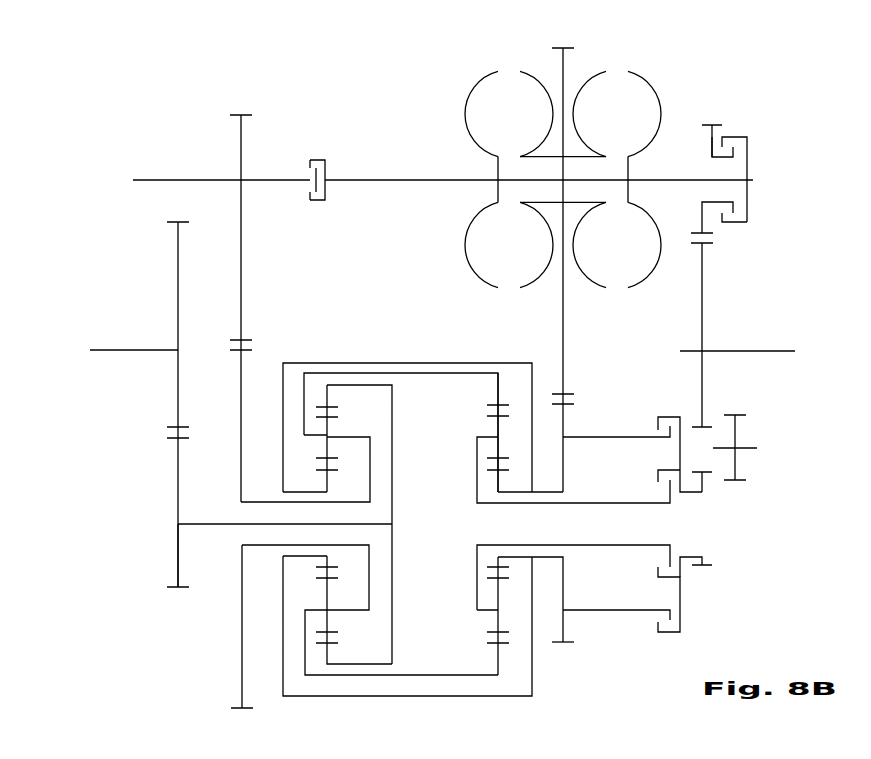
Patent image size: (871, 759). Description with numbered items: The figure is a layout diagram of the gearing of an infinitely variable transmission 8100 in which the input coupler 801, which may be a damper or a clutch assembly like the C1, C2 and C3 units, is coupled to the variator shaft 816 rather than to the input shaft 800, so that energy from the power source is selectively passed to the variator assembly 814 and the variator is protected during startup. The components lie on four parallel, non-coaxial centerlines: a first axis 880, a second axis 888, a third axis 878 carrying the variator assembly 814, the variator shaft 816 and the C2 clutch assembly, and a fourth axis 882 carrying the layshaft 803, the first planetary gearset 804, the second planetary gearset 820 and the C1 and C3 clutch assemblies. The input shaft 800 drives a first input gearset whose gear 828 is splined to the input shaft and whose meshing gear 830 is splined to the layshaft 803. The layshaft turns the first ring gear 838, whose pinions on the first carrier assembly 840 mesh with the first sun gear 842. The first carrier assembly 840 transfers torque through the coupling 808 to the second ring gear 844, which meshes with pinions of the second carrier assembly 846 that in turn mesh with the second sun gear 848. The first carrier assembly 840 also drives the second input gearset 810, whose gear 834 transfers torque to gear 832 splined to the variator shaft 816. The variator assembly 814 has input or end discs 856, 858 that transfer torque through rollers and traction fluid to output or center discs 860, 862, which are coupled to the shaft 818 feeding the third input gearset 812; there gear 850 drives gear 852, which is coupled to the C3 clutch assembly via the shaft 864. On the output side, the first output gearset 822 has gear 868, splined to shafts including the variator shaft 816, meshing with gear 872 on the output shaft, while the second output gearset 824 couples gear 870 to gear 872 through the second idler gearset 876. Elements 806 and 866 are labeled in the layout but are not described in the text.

The transmission 8100 is at (172, 92).
The third axis 878 is at (110, 180).
The variator shaft 816 is at (368, 177).
The input coupler 801 is at (318, 148).
The variator assembly 814 is at (556, 170).
The input disc 856 is at (466, 122).
The output disc 860 is at (551, 100).
The output disc 862 is at (575, 112).
The input disc 858 is at (660, 104).
The shaft 818 is at (600, 202).
The gear 850 is at (564, 336).
The first output gearset 822 is at (744, 148).
The C2 clutch assembly C2 is at (774, 133).
The gear 868 is at (712, 142).
The gear 872 is at (703, 283).
The second axis 888 is at (797, 352).
The gear 828 is at (178, 256).
The gear 832 is at (242, 248).
The first axis 880 is at (77, 350).
The input shaft 800 is at (137, 351).
The ring gear 806 is at (382, 362).
The first ring gear 838 is at (356, 373).
The coupling 808 is at (447, 363).
The first carrier assembly 840 is at (328, 430).
The first sun gear 842 is at (327, 445).
The second ring gear 844 is at (498, 393).
The second carrier assembly 846 is at (498, 426).
The second sun gear 848 is at (484, 474).
The shaft 864 is at (602, 437).
The shaft 866 is at (602, 503).
The C3 clutch assembly C3 is at (667, 446).
The C1 clutch assembly C1 is at (672, 480).
The second idler gearset 876 is at (736, 456).
The fourth axis 882 is at (163, 522).
The layshaft 803 is at (210, 523).
The gear 830 is at (178, 548).
The gear 834 is at (242, 633).
The second input gearset 810 is at (238, 716).
The first planetary gearset 804 is at (328, 701).
The second planetary gearset 820 is at (500, 701).
The gear 852 is at (564, 576).
The third input gearset 812 is at (561, 653).
The second output gearset 824 is at (704, 584).
The gear 870 is at (703, 560).